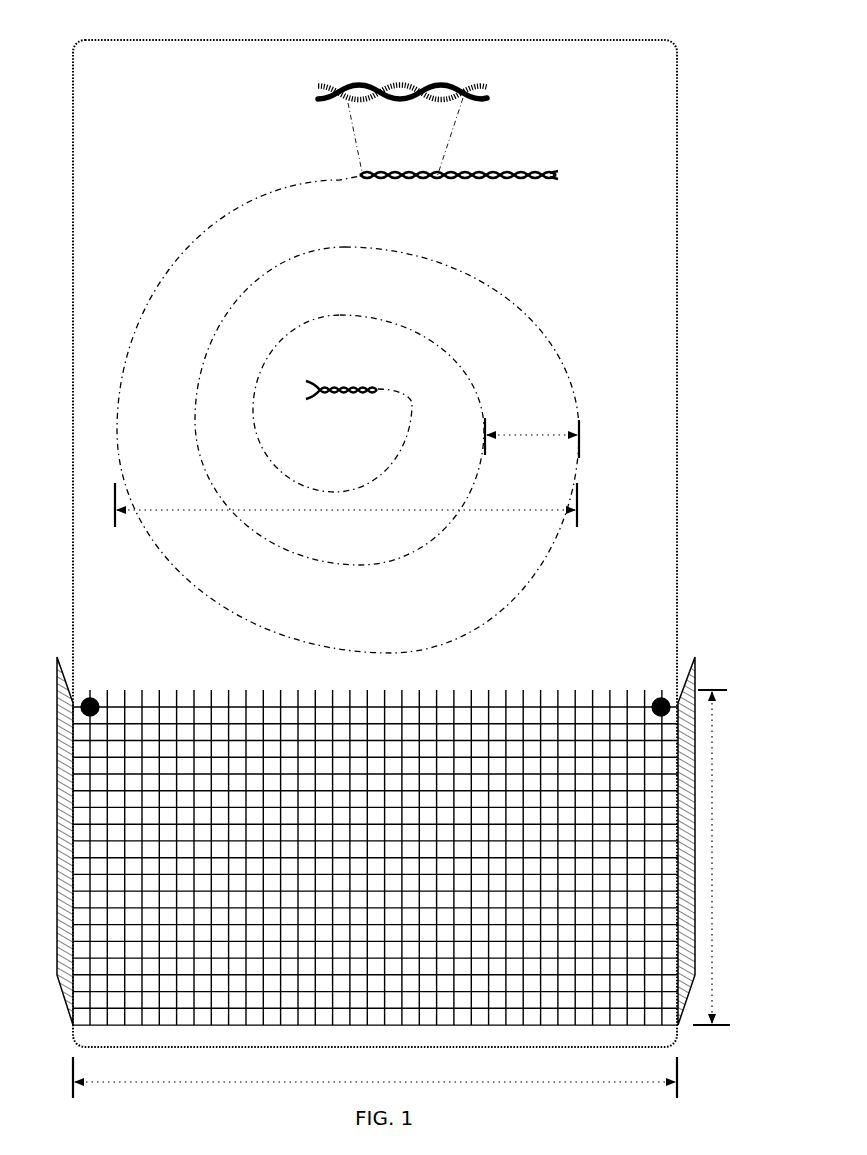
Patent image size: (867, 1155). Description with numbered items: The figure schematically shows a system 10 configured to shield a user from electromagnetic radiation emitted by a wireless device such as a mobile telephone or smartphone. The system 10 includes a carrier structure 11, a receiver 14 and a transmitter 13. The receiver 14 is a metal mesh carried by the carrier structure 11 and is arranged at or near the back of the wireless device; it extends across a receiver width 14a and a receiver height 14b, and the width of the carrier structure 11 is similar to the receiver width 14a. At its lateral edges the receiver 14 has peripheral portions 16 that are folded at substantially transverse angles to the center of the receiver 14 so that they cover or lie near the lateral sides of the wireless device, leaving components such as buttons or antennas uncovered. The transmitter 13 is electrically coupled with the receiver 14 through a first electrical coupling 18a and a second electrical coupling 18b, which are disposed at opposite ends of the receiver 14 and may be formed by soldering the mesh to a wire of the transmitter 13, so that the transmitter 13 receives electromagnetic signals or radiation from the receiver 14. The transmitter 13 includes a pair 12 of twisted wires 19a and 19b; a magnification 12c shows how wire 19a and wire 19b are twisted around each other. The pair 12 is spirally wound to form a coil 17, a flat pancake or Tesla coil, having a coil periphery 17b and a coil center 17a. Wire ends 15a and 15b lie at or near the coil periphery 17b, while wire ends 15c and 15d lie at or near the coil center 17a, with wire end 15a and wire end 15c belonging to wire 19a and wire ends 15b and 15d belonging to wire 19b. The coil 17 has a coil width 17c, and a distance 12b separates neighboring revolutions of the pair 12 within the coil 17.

The system 10 is at (395, 567).
The carrier structure 11 is at (342, 38).
The pair of twisted wires 12 is at (468, 133).
The distance between neighboring revolutions 12b is at (540, 437).
The magnification 12c is at (405, 137).
The transmitter 13 is at (346, 400).
The receiver 14 is at (400, 690).
The receiver width 14a is at (645, 1083).
The receiver height 14b is at (712, 975).
The wire end 15a is at (558, 172).
The wire end 15b is at (558, 178).
The wire end 15c is at (318, 385).
The wire end 15d is at (318, 395).
The peripheral portion 16 is at (58, 682).
The coil 17 is at (478, 385).
The coil center 17a is at (332, 403).
The coil periphery 17b is at (297, 186).
The coil width 17c is at (566, 512).
The first electrical coupling 18a is at (93, 700).
The second electrical coupling 18b is at (659, 700).
The wire 19a is at (410, 86).
The wire 19b is at (385, 98).